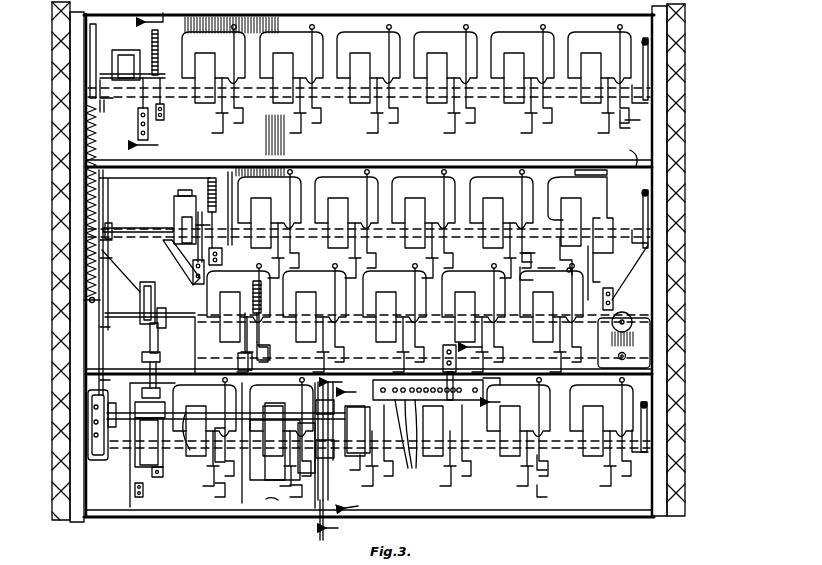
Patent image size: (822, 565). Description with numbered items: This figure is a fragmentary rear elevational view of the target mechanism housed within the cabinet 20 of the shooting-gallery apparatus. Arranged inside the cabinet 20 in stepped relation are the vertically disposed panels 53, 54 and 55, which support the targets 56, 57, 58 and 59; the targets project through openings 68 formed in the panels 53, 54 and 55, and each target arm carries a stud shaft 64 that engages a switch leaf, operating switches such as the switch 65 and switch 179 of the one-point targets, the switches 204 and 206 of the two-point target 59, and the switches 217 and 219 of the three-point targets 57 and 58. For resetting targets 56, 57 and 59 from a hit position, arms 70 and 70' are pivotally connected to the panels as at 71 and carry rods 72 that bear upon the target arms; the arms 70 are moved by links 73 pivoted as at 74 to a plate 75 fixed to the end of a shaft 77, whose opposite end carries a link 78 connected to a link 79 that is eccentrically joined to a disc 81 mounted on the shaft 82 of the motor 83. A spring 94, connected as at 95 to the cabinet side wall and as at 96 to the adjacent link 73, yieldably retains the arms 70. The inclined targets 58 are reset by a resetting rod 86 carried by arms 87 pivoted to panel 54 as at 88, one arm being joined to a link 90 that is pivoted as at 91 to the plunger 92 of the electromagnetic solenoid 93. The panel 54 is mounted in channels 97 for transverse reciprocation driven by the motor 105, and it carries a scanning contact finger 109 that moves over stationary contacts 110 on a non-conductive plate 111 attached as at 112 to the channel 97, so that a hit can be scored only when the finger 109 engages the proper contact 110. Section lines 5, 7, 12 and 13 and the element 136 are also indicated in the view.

The section line 5 is at (488, 375).
The section line 7 is at (159, 76).
The section line 12 is at (360, 446).
The section line 13 is at (344, 455).
The cabinet 20 is at (682, 440).
The panel 53 is at (640, 125).
The panel 54 is at (170, 258).
The panel 55 is at (670, 487).
The target 56 is at (112, 62).
The target 57 is at (178, 195).
The target 58 is at (258, 275).
The target 59 is at (216, 401).
The stud shaft 64 is at (159, 40).
The switch 65 is at (214, 117).
The openings 68 is at (100, 37).
The arm 70 is at (61, 232).
The arm 70' is at (671, 255).
The pivot 71 is at (648, 42).
The rod 72 is at (403, 96).
The link 73 is at (100, 325).
The pivot 74 is at (100, 378).
The plate 75 is at (100, 445).
The shaft 77 is at (213, 443).
The link 78 is at (358, 430).
The link 79 is at (368, 467).
The disc 81 is at (330, 453).
The shaft 82 is at (261, 497).
The motor 83 is at (282, 450).
The resetting rod 86 is at (173, 316).
The arm 87 is at (141, 295).
The pivot 88 is at (136, 282).
The link 90 is at (150, 346).
The pivot 91 is at (160, 355).
The plunger 92 is at (158, 362).
The electromagnetic solenoid 93 is at (150, 449).
The spring 94 is at (100, 247).
The connection 95 is at (90, 300).
The connection 96 is at (90, 107).
The channel 97 is at (645, 375).
The motor 105 is at (635, 300).
The scanning contact finger 109 is at (441, 356).
The stationary contacts 110 is at (410, 442).
The non-conductive plate 111 is at (394, 378).
The attachment 112 is at (490, 378).
The rod 136 is at (308, 512).
The switch 179 is at (220, 138).
The switch 204 is at (547, 478).
The switch 206 is at (547, 498).
The switch 217 is at (222, 258).
The switch 219 is at (193, 272).